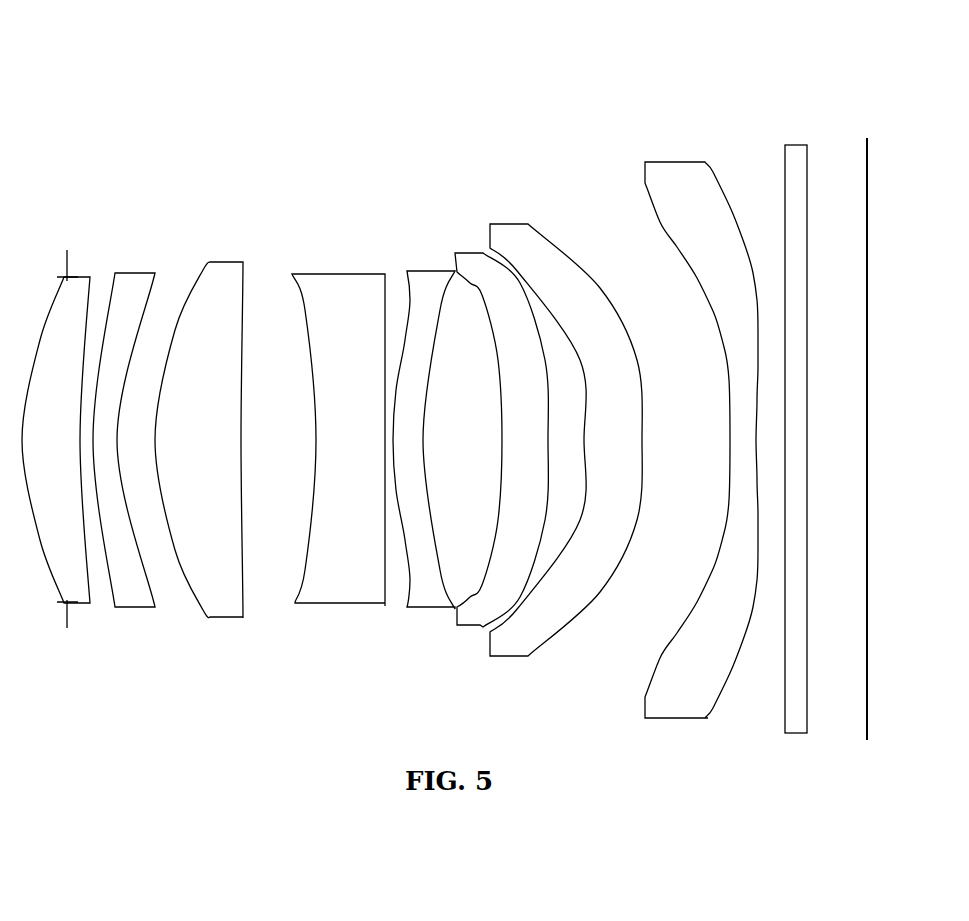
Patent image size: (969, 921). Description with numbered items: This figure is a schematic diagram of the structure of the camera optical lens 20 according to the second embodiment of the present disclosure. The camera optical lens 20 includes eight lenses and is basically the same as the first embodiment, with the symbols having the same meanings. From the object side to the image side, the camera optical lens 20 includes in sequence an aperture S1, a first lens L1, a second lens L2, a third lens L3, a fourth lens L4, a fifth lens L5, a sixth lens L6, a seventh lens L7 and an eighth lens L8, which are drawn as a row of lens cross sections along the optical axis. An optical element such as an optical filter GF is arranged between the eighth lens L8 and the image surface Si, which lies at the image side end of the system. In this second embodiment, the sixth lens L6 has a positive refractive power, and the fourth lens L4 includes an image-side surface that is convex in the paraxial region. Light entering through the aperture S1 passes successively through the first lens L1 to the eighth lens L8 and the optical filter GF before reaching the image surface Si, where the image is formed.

The camera optical lens 20 is at (448, 42).
The aperture S1 is at (67, 424).
The first lens L1 is at (59, 426).
The second lens L2 is at (124, 428).
The third lens L3 is at (199, 425).
The fourth lens L4 is at (338, 425).
The fifth lens L5 is at (424, 425).
The sixth lens L6 is at (501, 425).
The seventh lens L7 is at (566, 423).
The eighth lens L8 is at (701, 424).
The optical filter GF is at (798, 424).
The image surface Si is at (869, 427).